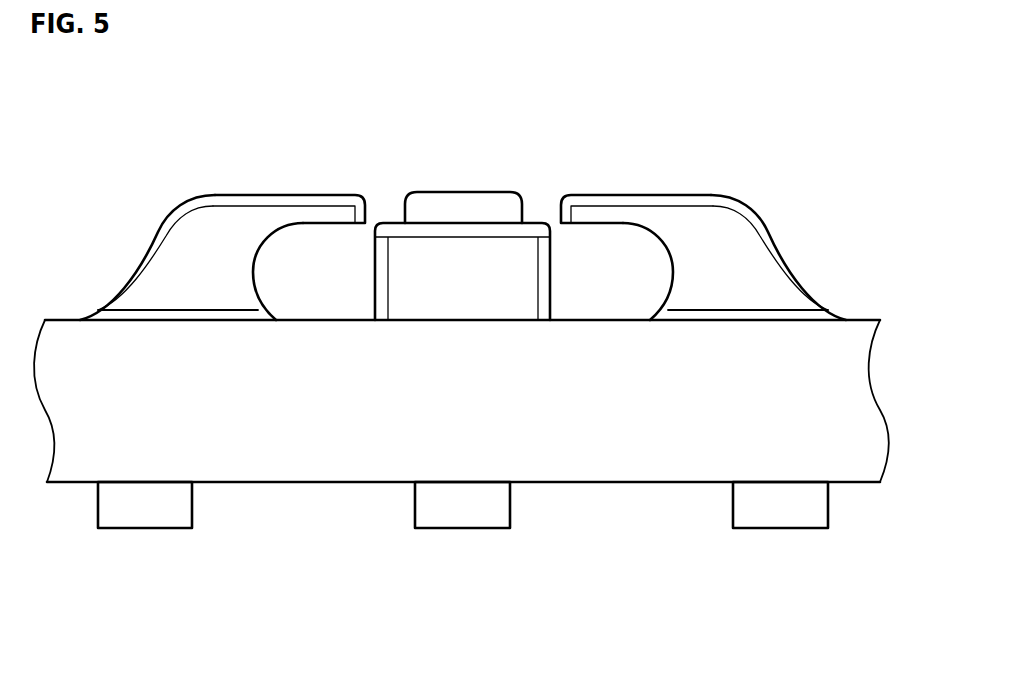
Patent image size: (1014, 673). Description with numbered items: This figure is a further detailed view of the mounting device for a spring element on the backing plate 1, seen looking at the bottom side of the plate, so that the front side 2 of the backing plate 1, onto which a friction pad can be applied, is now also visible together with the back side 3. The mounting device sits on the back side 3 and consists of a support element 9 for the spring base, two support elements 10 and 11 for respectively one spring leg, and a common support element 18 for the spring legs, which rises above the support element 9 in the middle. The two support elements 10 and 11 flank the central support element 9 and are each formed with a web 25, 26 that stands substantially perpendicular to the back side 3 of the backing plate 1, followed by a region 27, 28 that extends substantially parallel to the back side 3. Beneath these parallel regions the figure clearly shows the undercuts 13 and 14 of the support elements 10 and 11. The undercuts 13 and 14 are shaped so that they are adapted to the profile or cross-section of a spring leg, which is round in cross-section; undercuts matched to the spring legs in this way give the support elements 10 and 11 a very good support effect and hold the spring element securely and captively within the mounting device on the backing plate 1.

The backing plate 1 is at (641, 455).
The front side 2 is at (243, 482).
The back side 3 is at (473, 204).
The support element 9 is at (441, 249).
The common support element 18 is at (495, 192).
The support element 10 is at (201, 204).
The support element 11 is at (725, 204).
The undercut 13 is at (328, 252).
The undercut 14 is at (598, 252).
The web 25 is at (198, 258).
The web 26 is at (728, 258).
The region 27 is at (263, 195).
The region 28 is at (663, 195).